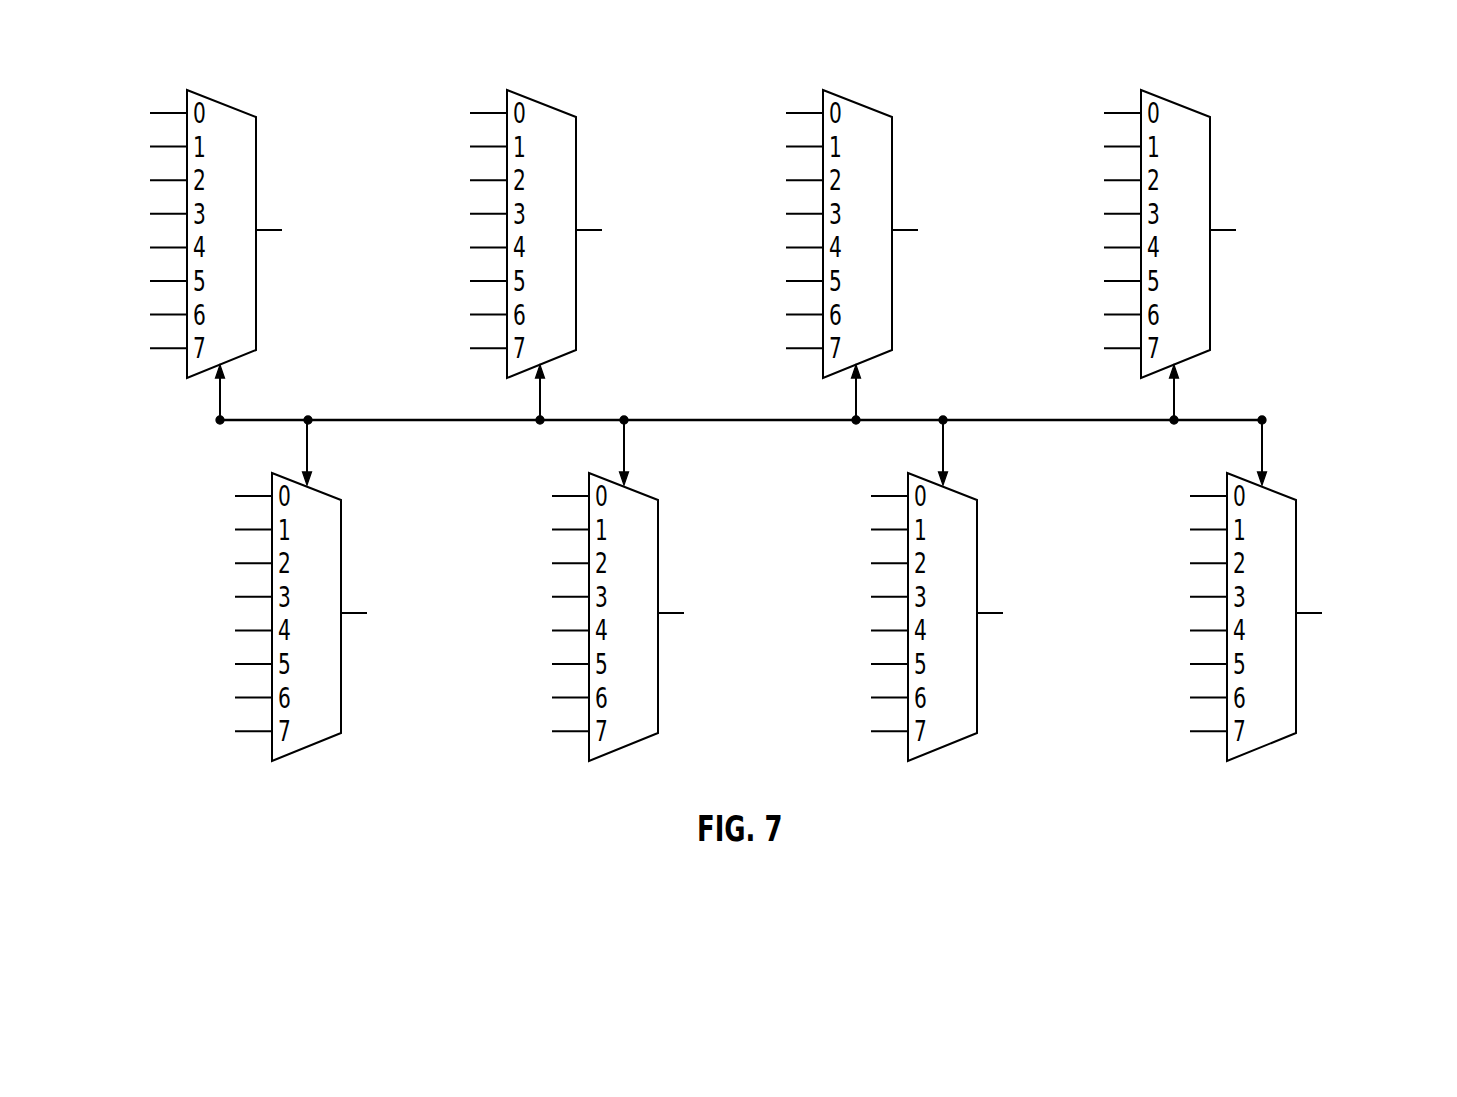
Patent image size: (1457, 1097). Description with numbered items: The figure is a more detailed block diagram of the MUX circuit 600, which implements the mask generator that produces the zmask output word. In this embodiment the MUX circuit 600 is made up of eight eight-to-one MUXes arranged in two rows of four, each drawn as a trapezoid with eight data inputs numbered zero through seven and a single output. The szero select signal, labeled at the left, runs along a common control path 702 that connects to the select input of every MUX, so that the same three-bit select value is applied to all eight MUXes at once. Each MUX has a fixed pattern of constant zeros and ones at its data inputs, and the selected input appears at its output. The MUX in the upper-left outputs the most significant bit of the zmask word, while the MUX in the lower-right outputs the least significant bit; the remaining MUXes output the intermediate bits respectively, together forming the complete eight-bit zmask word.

The MUX circuit 600 is at (1372, 86).
The common control path 702 is at (1223, 419).